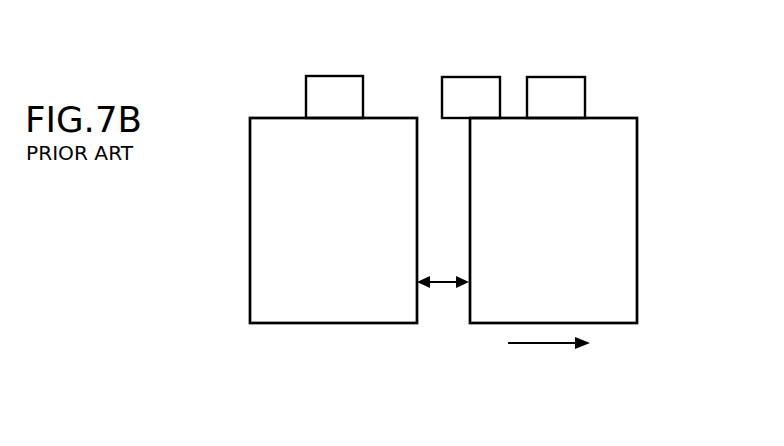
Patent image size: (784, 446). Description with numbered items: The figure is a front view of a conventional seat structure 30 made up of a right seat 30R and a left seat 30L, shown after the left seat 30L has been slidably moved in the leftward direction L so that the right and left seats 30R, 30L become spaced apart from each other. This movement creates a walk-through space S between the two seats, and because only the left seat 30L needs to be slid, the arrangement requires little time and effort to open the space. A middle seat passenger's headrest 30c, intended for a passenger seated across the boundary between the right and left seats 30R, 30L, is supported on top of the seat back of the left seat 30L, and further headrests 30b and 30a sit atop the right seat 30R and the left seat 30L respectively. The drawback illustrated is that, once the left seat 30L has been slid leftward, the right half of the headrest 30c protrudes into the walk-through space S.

The conventional seat structure 30 is at (652, 108).
The right seat 30R is at (263, 260).
The left seat 30L is at (626, 259).
The contact portion a 30a is at (561, 88).
The contact portion b 30b is at (340, 88).
The middle seat passenger's headrest 30c is at (485, 88).
The walk-through space S is at (443, 286).
The leftward direction L is at (550, 346).